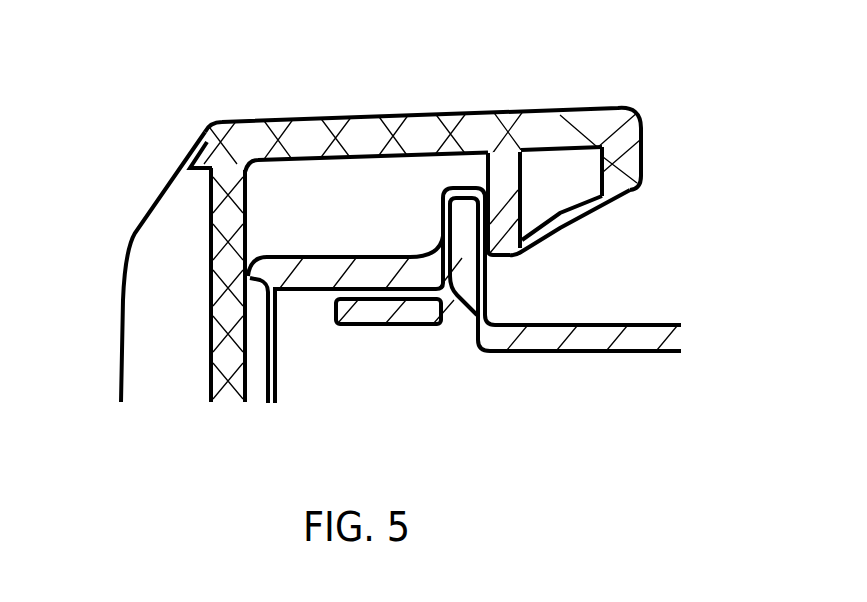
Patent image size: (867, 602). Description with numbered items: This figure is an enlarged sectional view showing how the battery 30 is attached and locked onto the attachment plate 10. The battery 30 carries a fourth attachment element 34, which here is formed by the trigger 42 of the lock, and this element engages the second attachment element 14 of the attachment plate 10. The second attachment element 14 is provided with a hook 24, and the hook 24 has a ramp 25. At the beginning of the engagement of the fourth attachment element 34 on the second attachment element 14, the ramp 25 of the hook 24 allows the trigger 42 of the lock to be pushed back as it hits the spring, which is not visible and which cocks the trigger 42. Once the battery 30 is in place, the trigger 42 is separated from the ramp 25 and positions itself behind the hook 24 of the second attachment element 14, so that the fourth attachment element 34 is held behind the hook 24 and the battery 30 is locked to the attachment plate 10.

The attachment plate 10 is at (203, 298).
The second attachment element 14 is at (540, 127).
The hook 24 is at (500, 197).
The ramp 25 is at (580, 218).
The battery 30 is at (257, 340).
The fourth attachment element 34 is at (437, 333).
The trigger 42 is at (465, 217).